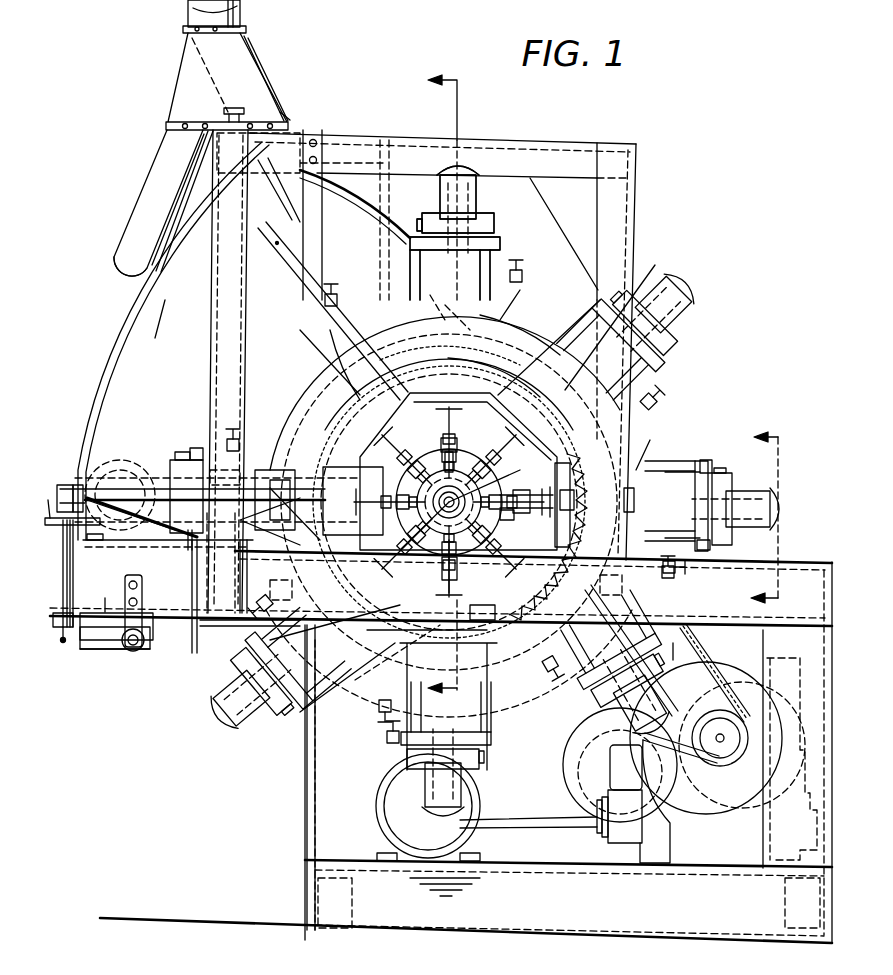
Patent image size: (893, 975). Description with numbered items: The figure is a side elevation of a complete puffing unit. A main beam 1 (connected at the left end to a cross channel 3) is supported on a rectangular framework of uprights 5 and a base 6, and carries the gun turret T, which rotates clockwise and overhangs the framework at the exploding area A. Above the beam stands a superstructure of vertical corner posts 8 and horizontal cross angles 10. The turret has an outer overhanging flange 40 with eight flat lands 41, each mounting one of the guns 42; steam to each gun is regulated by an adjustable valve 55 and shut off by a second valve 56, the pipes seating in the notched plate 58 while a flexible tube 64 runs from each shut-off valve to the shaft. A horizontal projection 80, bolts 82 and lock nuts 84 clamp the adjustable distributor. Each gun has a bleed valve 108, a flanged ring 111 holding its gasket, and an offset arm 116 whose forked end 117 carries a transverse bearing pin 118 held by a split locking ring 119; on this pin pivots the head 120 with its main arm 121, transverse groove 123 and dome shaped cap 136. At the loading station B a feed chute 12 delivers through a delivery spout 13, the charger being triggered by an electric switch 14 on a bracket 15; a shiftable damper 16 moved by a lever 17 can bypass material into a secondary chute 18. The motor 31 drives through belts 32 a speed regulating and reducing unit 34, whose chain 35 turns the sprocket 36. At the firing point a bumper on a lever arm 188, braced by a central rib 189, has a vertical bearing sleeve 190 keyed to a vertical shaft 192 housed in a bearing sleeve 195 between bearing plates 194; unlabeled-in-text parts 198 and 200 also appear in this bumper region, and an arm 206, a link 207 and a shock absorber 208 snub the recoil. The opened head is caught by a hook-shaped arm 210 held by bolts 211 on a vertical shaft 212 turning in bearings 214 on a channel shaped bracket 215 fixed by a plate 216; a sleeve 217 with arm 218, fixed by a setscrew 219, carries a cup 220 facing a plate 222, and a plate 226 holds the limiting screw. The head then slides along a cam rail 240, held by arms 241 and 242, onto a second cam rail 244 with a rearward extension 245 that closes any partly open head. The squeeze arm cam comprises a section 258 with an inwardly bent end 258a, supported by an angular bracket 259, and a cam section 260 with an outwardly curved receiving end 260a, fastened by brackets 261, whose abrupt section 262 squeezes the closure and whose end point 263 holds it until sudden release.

The beam 1 is at (800, 572).
The cross channel 3 is at (277, 391).
The uprights 5 is at (305, 792).
The base 6 is at (648, 932).
The vertical corner posts 8 is at (625, 210).
The horizontal cross angles 10 is at (555, 152).
The feed chute 12 is at (243, 18).
The delivery spout 13 is at (290, 241).
The electric switch 14 is at (277, 243).
The bracket 15 is at (318, 246).
The shiftable damper 16 is at (192, 65).
The lever 17 is at (234, 107).
The secondary chute 18 is at (140, 212).
The motor 31 is at (425, 848).
The belts 32 is at (536, 828).
The speed regulating and reducing unit 34 is at (631, 650).
The chain 35 is at (695, 655).
The sprocket 36 is at (576, 575).
The outer overhanging flange 40 is at (428, 402).
The flat lands 41 is at (458, 400).
The guns 42 is at (500, 306).
The adjustable valve 55 is at (435, 440).
The second valve 56 is at (437, 440).
The plate 58 is at (493, 476).
The flexible tube 64 is at (458, 448).
The horizontal projection 80 is at (458, 566).
The bolts 82 is at (432, 510).
The lock nuts 84 is at (440, 556).
The bleed valve 108 is at (336, 300).
The flanged ring 111 is at (500, 242).
The offset arm 116 is at (425, 252).
The forked end 117 is at (430, 212).
The transverse bearing pin 118 is at (495, 228).
The split locking ring 119 is at (420, 218).
The head 120 is at (180, 295).
The main arm 121 is at (440, 200).
The transverse groove 123 is at (165, 242).
The dome shaped cap 136 is at (192, 265).
The lever arm 188 is at (255, 492).
The central rib 189 is at (190, 552).
The vertical bearing sleeve 190 is at (238, 468).
The vertical shaft 192 is at (222, 635).
The bearing plates 194 is at (247, 545).
The bearing sleeve 195 is at (215, 588).
The link 198 is at (285, 530).
The shaft housing 200 is at (315, 468).
The arm 206 is at (296, 640).
The link 207 is at (490, 625).
The shock absorber 208 is at (378, 660).
The hook-shaped arm 210 is at (64, 483).
The bolts 211 is at (55, 514).
The vertical shaft 212 is at (63, 570).
The bearings 214 is at (100, 515).
The channel shaped bracket 215 is at (83, 560).
The plate 216 is at (100, 545).
The sleeve 217 is at (95, 648).
The arm 218 is at (108, 650).
The setscrew 219 is at (63, 645).
The cup 220 is at (133, 651).
The plate 222 is at (143, 640).
The plate 226 is at (125, 622).
The cam rail 240 is at (125, 330).
The arm 241 is at (149, 326).
The arm 242 is at (303, 207).
The second cam rail 244 is at (380, 206).
The rearward extension 245 is at (205, 210).
The squeeze arm cam section 258 is at (370, 366).
The inwardly bent end 258a is at (450, 346).
The angular bracket 259 is at (315, 252).
The cam section 260 is at (507, 347).
The outwardly curved receiving end 260a is at (435, 292).
The brackets 261 is at (480, 182).
The abrupt section 262 is at (505, 326).
The end point 263 is at (300, 520).
The exploding area A is at (120, 482).
The loading station B is at (286, 103).
The gun turret T is at (510, 368).